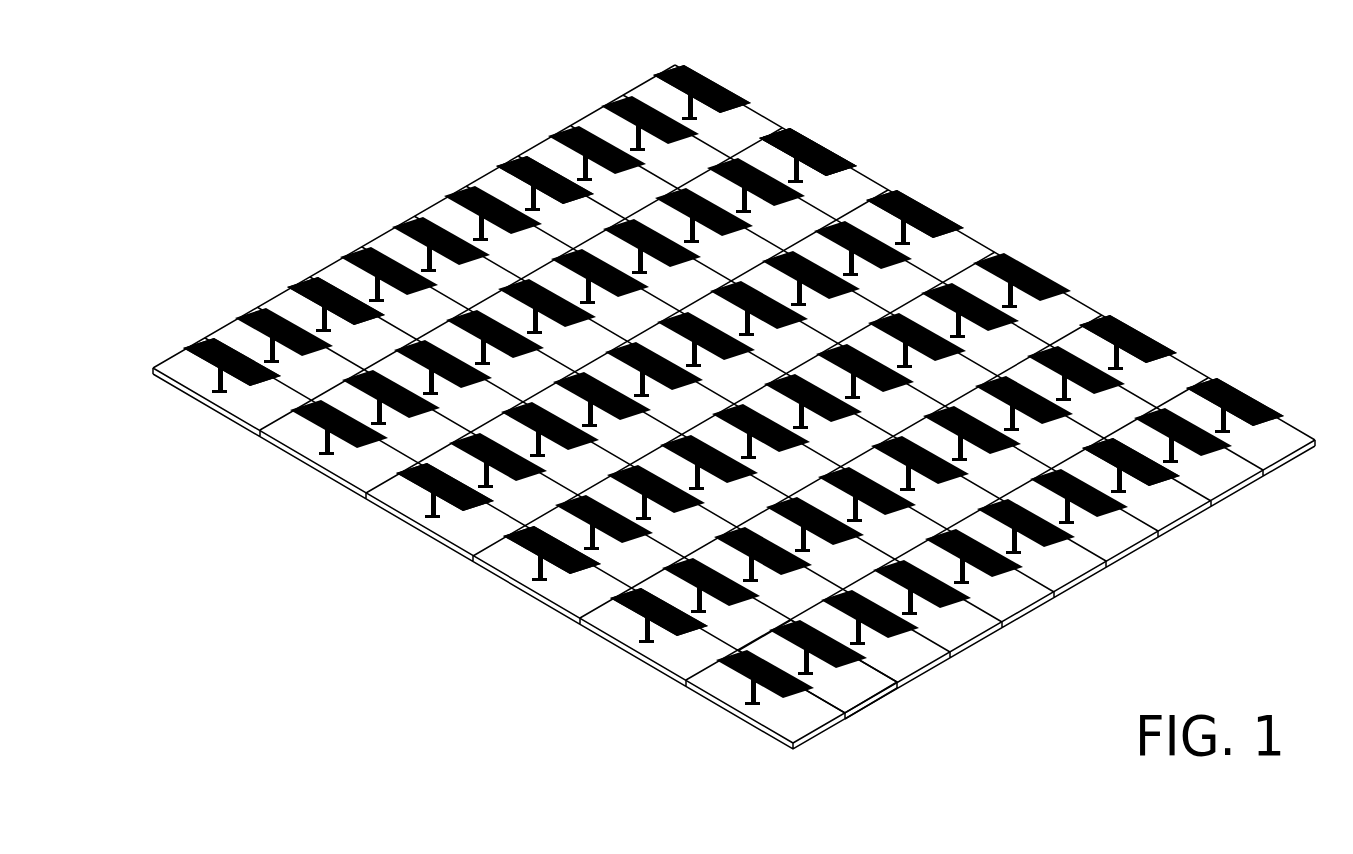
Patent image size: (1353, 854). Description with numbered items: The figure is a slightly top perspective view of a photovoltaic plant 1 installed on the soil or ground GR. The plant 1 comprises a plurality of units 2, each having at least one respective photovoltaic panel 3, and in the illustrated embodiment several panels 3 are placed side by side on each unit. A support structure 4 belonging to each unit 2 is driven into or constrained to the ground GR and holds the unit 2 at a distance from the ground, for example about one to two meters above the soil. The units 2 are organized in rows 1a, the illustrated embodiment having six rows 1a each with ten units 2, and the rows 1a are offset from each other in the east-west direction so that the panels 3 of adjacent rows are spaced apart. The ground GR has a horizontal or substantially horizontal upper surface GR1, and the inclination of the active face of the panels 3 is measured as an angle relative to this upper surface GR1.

The photovoltaic plant 1 is at (734, 393).
The row 1a is at (858, 156).
The unit 2 is at (513, 158).
The photovoltaic panel 3 is at (742, 92).
The support structure 4 is at (1013, 306).
The soil or ground GR is at (1070, 568).
The upper surface GR1 is at (863, 688).